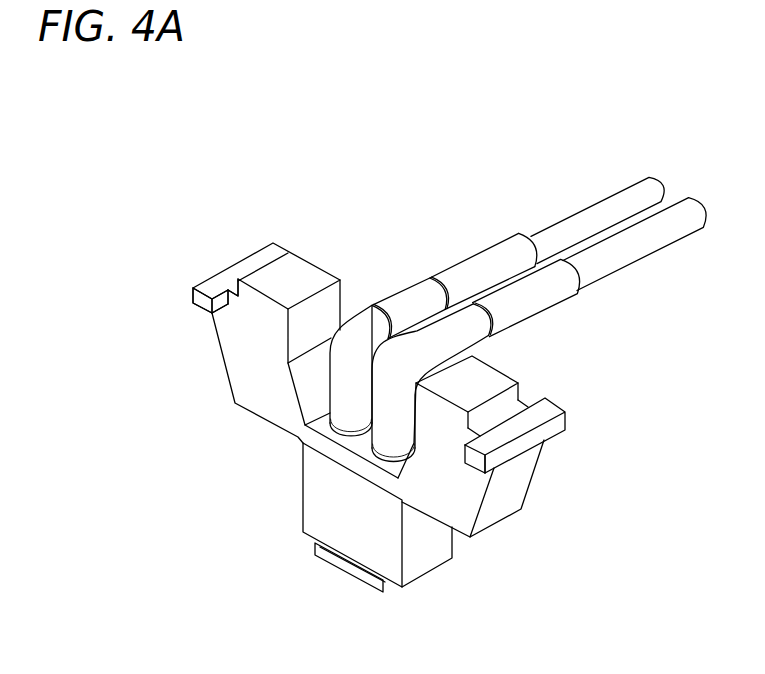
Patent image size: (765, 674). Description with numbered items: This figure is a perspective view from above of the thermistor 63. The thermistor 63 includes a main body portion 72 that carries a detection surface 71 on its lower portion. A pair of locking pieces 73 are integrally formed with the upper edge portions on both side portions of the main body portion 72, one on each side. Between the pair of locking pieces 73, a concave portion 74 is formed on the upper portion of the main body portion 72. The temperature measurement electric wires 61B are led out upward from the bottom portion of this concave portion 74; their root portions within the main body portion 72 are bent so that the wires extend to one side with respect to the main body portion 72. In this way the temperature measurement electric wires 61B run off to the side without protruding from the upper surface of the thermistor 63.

The temperature measurement electric wires 61B is at (637, 240).
The thermistor 63 is at (387, 373).
The detection surface 71 is at (349, 572).
The main body portion 72 is at (321, 497).
The locking pieces 73 is at (217, 275).
The concave portion 74 is at (305, 378).